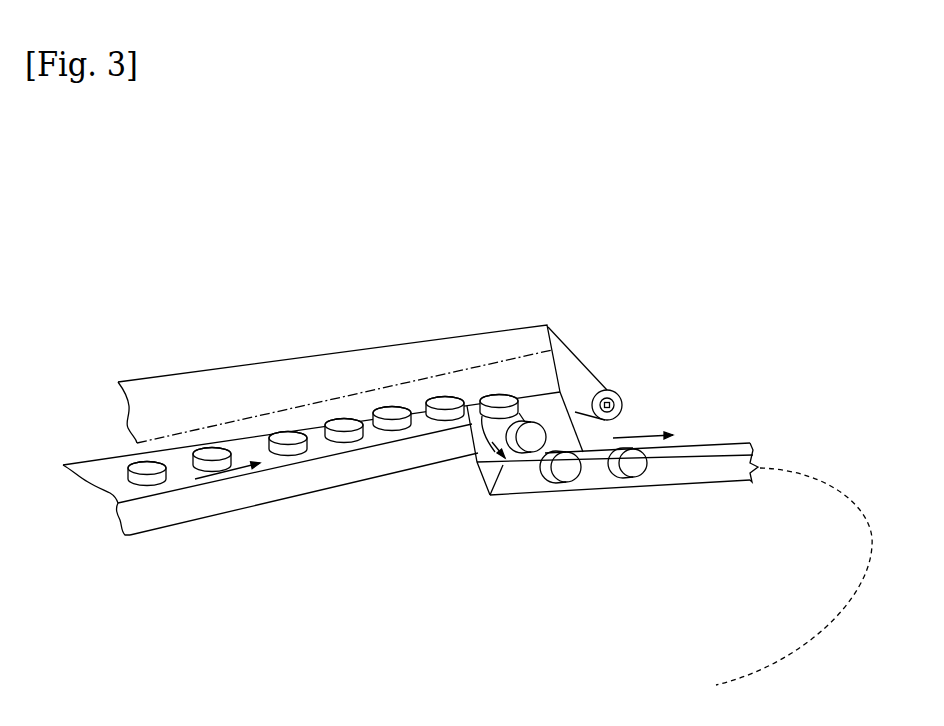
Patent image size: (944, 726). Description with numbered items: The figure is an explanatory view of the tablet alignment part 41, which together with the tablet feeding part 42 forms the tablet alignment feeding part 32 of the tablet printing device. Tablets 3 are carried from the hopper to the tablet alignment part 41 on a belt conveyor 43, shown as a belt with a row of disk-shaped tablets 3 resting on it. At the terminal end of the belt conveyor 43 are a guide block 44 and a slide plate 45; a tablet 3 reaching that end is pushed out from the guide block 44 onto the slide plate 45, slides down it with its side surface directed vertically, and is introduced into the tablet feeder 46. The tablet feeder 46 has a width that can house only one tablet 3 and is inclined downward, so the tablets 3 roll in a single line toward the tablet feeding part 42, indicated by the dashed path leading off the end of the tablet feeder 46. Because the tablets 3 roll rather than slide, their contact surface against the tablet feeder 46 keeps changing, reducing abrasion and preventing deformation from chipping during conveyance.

The tablet 3 is at (510, 392).
The tablet alignment feeding part 32 is at (728, 360).
The tablet alignment part 41 is at (435, 330).
The tablet feeding part 42 is at (776, 586).
The belt conveyor 43 is at (105, 465).
The guide block 44 is at (512, 340).
The slide plate 45 is at (477, 433).
The tablet feeder 46 is at (707, 473).